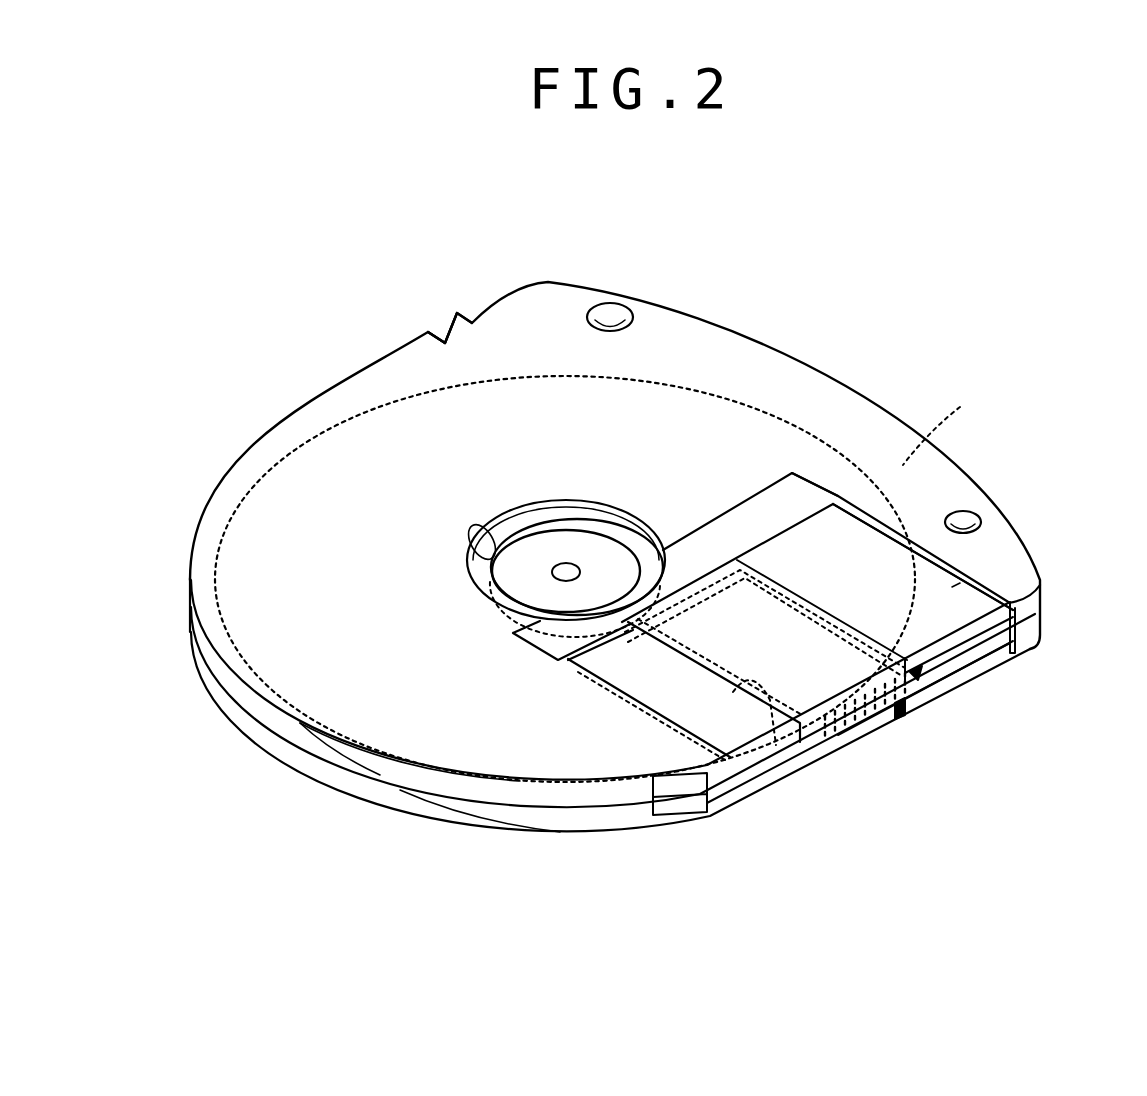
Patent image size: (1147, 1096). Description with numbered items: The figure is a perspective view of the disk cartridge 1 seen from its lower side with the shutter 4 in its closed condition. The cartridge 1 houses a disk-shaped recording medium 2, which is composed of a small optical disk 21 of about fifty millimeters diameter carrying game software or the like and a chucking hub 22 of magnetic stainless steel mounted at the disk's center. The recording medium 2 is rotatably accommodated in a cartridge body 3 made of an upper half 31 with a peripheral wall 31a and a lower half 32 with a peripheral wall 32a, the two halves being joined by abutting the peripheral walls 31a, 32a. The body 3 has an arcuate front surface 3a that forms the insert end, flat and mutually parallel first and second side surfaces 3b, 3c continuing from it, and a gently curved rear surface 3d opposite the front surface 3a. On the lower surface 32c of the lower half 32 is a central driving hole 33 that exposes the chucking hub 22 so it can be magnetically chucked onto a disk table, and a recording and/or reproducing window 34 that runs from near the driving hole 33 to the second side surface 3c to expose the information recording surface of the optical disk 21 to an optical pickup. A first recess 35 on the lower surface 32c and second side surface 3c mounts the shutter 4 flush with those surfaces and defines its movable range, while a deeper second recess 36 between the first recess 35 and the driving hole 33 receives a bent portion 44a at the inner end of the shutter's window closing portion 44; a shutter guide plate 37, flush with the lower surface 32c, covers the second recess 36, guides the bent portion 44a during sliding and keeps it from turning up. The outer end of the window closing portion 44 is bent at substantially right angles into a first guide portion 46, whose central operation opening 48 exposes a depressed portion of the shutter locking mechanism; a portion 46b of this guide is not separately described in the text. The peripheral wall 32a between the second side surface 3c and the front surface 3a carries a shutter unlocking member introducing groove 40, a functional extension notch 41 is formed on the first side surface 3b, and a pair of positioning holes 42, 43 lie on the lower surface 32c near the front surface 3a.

The disk cartridge 1 is at (270, 332).
The recording medium 2 is at (682, 247).
The cartridge body 3 is at (204, 486).
The front surface 3a is at (342, 793).
The first side surface 3b is at (485, 296).
The second side surface 3c is at (742, 810).
The rear surface 3d is at (795, 478).
The shutter 4 is at (907, 655).
The optical disk 21 is at (640, 377).
The chucking hub 22 is at (613, 533).
The upper half 31 is at (298, 762).
The peripheral wall 31a is at (490, 820).
The lower half 32 is at (290, 721).
The peripheral wall 32a is at (417, 778).
The lower surface 32c is at (583, 767).
The central driving hole 33 is at (493, 523).
The recording and/or reproducing window 34 is at (776, 745).
The first recess 35 is at (1025, 590).
The second recess 36 is at (822, 497).
The shutter guide plate 37 is at (800, 483).
The shutter unlocking member introducing groove 40 is at (783, 763).
The functional extension notch 41 is at (445, 322).
The positioning hole 42 is at (600, 300).
The positioning hole 43 is at (960, 512).
The window closing portion 44 is at (952, 587).
The bent portion 44a is at (948, 419).
The first guide portion 46 is at (877, 737).
The terminal end 46b is at (920, 675).
The operation opening 48 is at (902, 712).